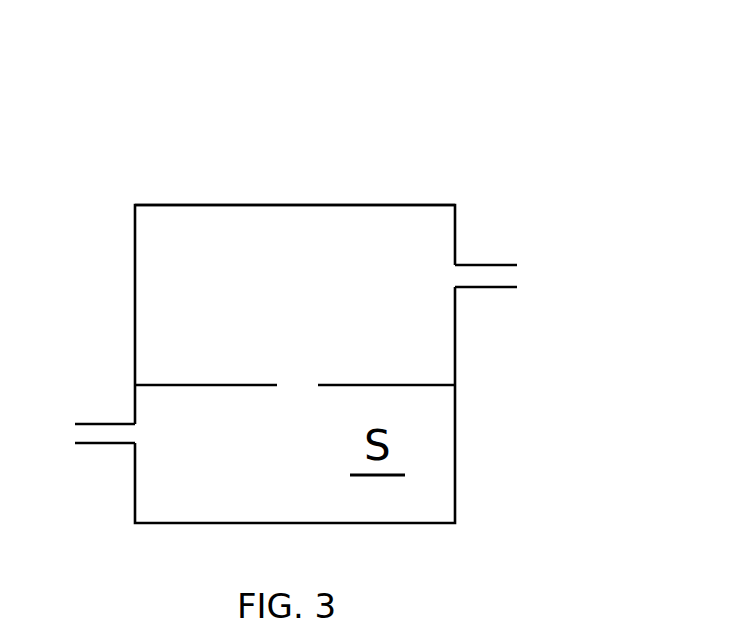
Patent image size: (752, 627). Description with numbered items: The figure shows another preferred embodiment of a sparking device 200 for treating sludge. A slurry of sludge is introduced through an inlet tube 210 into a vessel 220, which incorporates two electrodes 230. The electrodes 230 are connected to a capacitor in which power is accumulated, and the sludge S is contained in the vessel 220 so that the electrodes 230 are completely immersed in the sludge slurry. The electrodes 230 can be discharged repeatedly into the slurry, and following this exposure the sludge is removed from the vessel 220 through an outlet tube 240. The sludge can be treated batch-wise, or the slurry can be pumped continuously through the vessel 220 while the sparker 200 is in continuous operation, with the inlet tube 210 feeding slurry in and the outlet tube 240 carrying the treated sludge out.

The sparking device 200 is at (420, 150).
The inlet tube 210 is at (94, 448).
The vessel 220 is at (243, 203).
The electrodes 230 is at (151, 382).
The outlet tube 240 is at (500, 265).